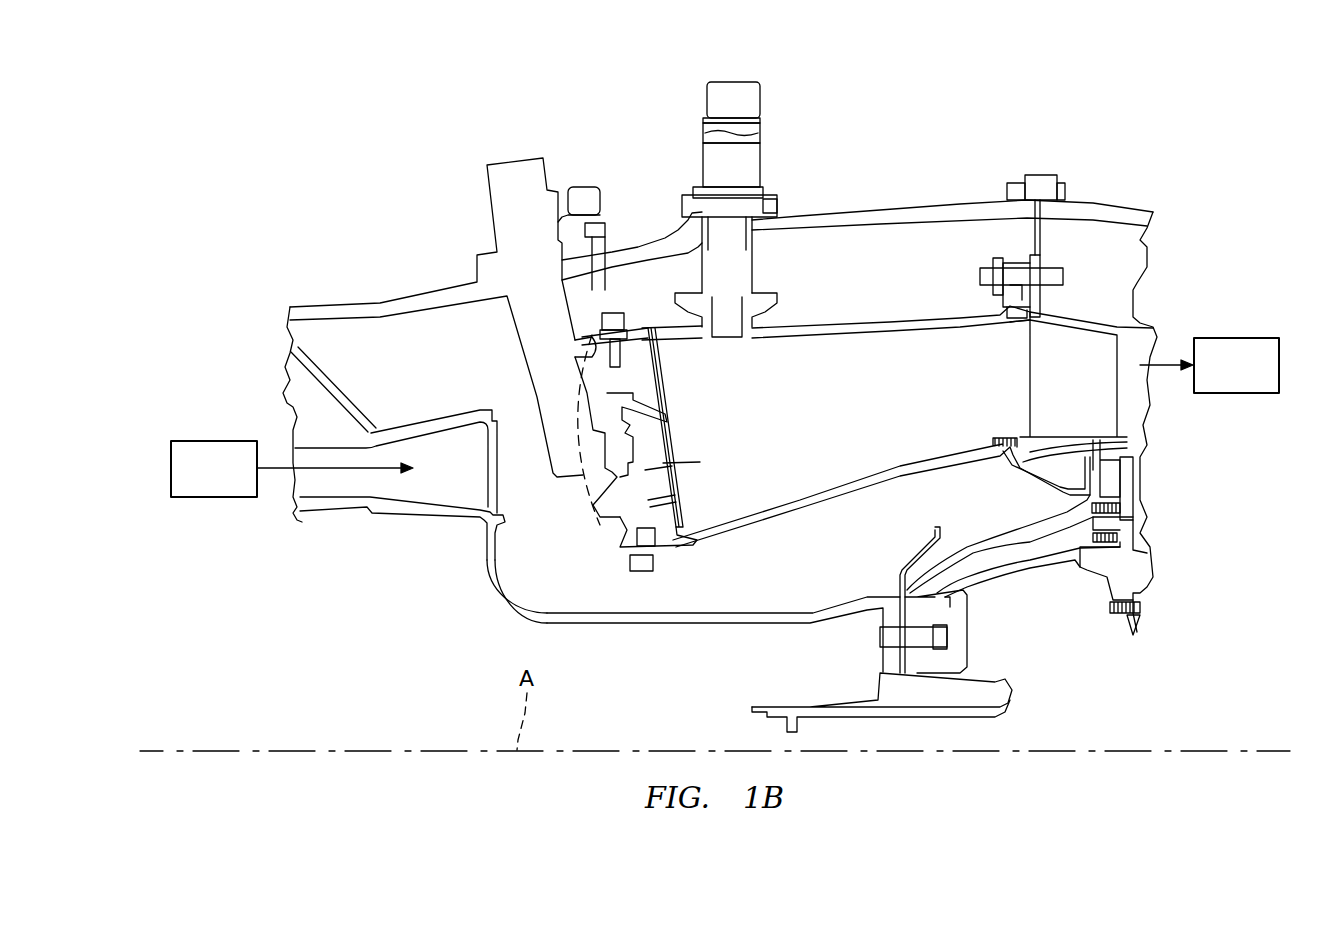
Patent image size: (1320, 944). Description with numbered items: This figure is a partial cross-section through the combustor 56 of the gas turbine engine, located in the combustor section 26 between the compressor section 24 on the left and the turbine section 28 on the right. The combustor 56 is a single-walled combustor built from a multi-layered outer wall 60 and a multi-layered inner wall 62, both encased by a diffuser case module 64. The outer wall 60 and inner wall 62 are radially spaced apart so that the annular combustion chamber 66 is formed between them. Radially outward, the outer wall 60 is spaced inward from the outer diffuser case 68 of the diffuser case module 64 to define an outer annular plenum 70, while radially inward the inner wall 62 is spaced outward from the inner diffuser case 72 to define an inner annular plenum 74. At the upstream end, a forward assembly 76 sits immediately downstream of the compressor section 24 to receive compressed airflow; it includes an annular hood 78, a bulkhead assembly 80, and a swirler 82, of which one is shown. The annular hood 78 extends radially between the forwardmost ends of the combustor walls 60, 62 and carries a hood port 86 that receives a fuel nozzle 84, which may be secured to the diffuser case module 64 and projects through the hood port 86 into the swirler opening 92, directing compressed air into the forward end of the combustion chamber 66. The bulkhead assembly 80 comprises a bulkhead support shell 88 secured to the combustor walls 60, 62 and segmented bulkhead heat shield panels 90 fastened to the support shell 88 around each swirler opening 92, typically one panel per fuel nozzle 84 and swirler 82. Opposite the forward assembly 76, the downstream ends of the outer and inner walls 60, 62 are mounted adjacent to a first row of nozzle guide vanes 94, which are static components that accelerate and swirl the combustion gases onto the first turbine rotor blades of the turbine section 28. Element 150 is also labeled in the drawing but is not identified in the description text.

The compressor section 24 is at (228, 481).
The combustor section 26 is at (1068, 160).
The turbine section 28 is at (1250, 378).
The combustor 56 is at (1055, 125).
The outer wall 60 is at (915, 320).
The inner wall 62 is at (823, 493).
The diffuser case module 64 is at (874, 203).
The annular combustion chamber 66 is at (894, 409).
The outer diffuser case 68 is at (930, 212).
The outer annular plenum 70 is at (843, 295).
The inner diffuser case 72 is at (747, 623).
The inner annular plenum 74 is at (805, 560).
The forward assembly 76 is at (589, 566).
The annular hood 78 is at (597, 530).
The bulkhead assembly 80 is at (664, 382).
The swirler 82 is at (671, 410).
The fuel nozzle 84 is at (546, 279).
The hood port 86 is at (590, 508).
The bulkhead support shell 88 is at (600, 547).
The bulkhead heat shield panel 90 is at (673, 505).
The swirler opening 92 is at (673, 473).
The nozzle guide vane 94 is at (1083, 377).
The sensor boss 150 is at (745, 340).